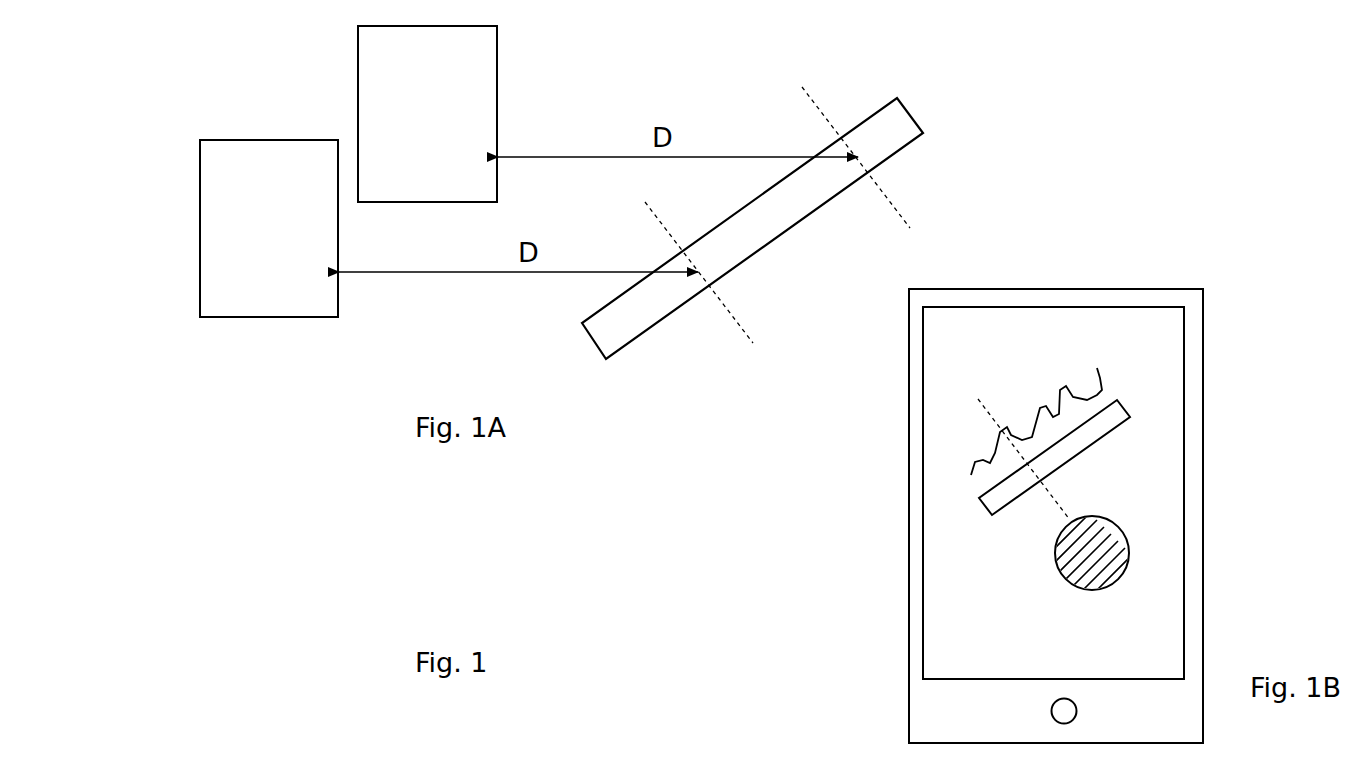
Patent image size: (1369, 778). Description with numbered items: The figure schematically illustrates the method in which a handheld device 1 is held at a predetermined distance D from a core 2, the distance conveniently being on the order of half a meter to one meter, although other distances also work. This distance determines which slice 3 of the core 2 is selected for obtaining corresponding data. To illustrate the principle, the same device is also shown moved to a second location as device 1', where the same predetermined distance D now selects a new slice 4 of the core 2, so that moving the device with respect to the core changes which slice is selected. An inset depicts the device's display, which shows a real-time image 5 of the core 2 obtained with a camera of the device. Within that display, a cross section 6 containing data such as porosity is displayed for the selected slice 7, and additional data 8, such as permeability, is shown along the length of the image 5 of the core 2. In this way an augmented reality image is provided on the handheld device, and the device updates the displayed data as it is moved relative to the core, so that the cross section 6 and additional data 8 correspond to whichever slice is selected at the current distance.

In FIG. 1A, the handheld device 1 is at (269, 264).
In FIG. 1A, the device at second location 1' is at (427, 147).
In FIG. 1A, the core 2 is at (896, 156).
In FIG. 1A, the slice 3 is at (699, 294).
In FIG. 1A, the new slice 4 is at (863, 180).
In FIG. 1B, the real-time image 5 is at (1093, 443).
In FIG. 1B, the cross section 6 is at (1128, 553).
In FIG. 1B, the slice 7 is at (1057, 502).
In FIG. 1B, the additional data 8 is at (1103, 388).